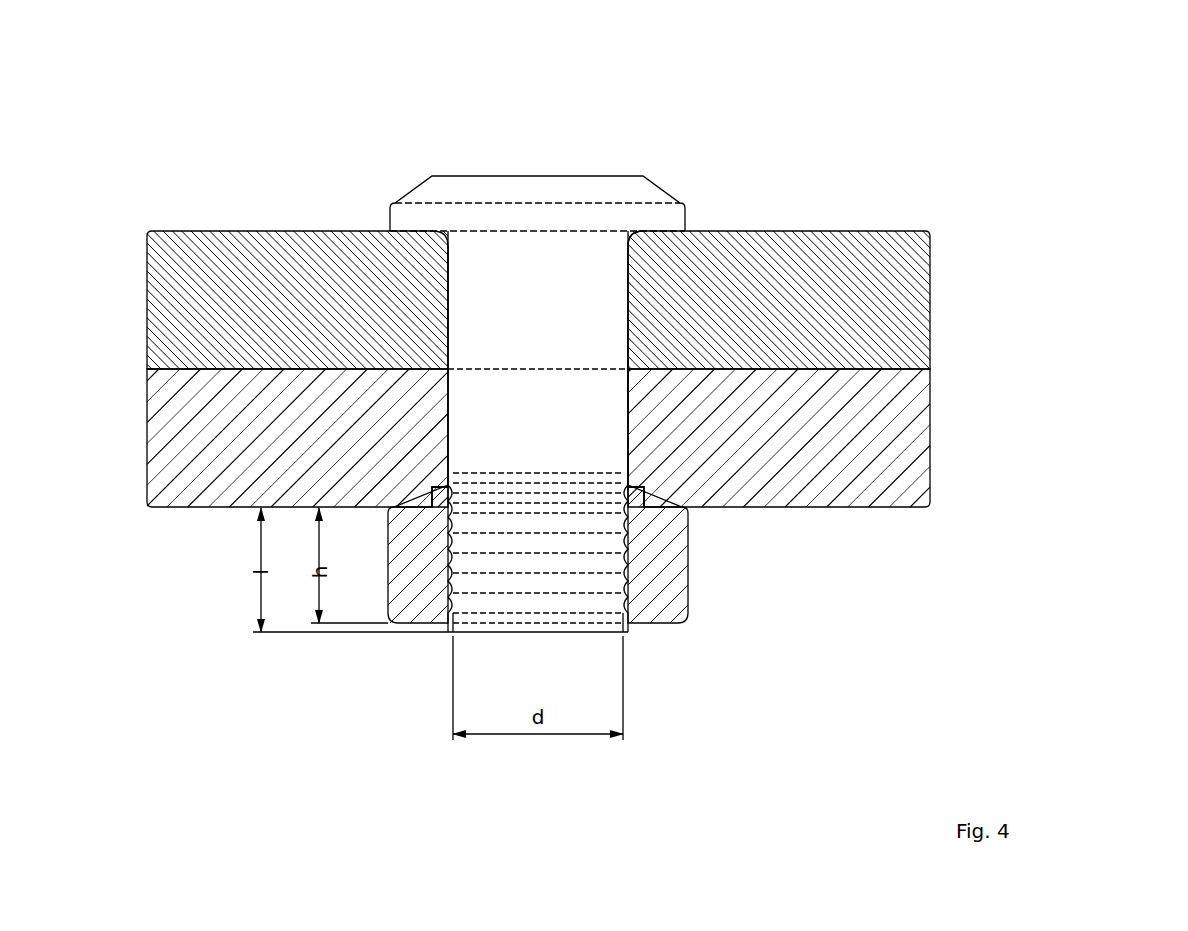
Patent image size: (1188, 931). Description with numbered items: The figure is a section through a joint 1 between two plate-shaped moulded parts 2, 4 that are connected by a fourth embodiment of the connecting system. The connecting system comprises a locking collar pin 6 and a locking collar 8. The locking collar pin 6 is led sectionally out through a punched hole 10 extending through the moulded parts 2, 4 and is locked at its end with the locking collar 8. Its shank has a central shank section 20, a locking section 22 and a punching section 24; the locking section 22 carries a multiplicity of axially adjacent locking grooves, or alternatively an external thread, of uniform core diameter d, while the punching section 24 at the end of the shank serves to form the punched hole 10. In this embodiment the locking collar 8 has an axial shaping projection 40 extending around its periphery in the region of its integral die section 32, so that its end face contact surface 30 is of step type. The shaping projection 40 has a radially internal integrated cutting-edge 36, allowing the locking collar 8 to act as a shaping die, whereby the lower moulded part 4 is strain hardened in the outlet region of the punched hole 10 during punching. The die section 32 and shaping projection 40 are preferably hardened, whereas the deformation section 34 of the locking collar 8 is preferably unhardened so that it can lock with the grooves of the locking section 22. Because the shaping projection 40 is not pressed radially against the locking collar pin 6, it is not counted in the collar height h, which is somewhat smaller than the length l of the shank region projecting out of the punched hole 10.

The joint 1 is at (220, 148).
The moulded part 2 is at (890, 260).
The moulded part 4 is at (902, 480).
The locking collar pin 6 is at (685, 203).
The locking collar 8 is at (693, 608).
The punched hole 10 is at (628, 346).
The central shank section 20 is at (632, 279).
The locking section 22 is at (630, 585).
The punching section 24 is at (630, 636).
The contact surface 30 is at (646, 493).
The die section 32 is at (667, 515).
The deformation section 34 is at (667, 562).
The cutting-edge 36 is at (626, 485).
The shaping projection 40 is at (648, 512).